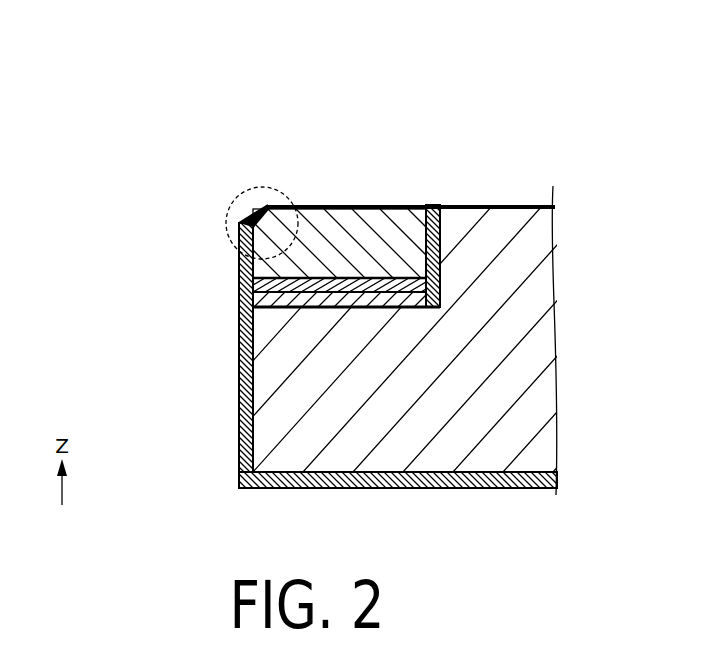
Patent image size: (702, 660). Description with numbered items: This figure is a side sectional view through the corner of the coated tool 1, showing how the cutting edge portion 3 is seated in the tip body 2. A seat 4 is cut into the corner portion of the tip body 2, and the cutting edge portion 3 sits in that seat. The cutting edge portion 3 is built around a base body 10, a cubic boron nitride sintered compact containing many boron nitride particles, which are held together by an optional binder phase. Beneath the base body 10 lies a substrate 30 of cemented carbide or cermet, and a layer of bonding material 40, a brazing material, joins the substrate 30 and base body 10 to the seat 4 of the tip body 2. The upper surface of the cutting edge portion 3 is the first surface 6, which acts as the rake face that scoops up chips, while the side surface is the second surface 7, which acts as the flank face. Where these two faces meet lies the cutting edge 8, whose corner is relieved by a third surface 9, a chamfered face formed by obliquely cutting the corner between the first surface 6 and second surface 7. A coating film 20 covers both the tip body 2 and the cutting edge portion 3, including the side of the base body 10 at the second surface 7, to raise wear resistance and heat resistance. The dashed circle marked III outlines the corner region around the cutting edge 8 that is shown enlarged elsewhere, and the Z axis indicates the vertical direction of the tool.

The coated tool 1 is at (188, 96).
The tip body 2 is at (495, 250).
The cutting edge portion 3 is at (365, 192).
The seat 4 is at (308, 305).
The first surface 6 is at (323, 205).
The second surface 7 is at (242, 247).
The cutting edge 8 is at (211, 158).
The third surface 9 is at (243, 221).
The base body 10 is at (398, 247).
The coating film 20 is at (243, 382).
The substrate 30 is at (256, 300).
The bonding material 40 is at (240, 320).
The detail region III is at (265, 187).